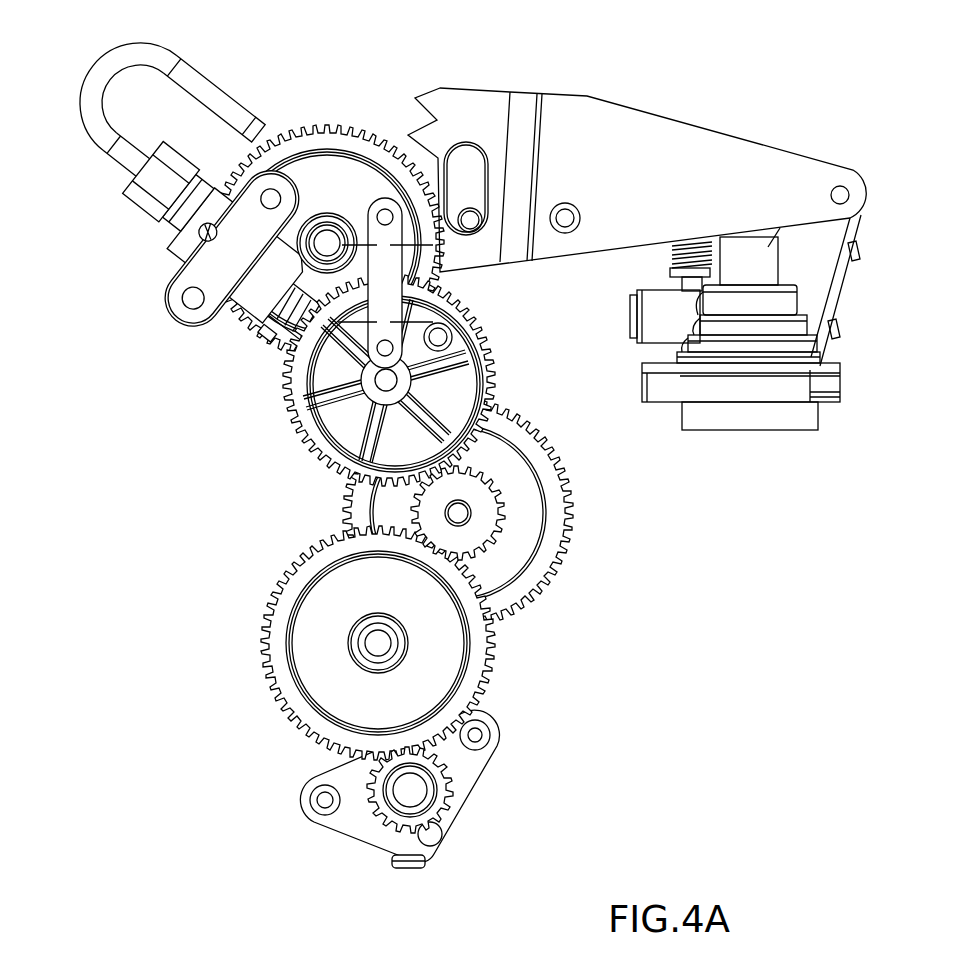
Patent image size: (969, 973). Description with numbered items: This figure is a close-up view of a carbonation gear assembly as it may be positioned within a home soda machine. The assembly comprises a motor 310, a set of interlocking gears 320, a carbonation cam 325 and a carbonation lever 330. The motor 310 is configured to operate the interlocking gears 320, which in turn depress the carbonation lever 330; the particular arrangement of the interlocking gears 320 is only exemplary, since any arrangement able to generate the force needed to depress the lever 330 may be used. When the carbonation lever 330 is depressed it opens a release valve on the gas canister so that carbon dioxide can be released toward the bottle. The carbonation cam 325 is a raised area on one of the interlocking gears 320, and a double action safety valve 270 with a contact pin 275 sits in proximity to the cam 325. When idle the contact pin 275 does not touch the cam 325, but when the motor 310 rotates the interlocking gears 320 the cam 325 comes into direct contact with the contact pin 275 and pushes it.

The interlocking gears 320 is at (353, 443).
The carbonation lever 330 is at (587, 97).
The double action safety valve 270 is at (193, 245).
The contact pin 275 is at (267, 336).
The carbonation cam 325 is at (325, 313).
The motor 310 is at (337, 832).